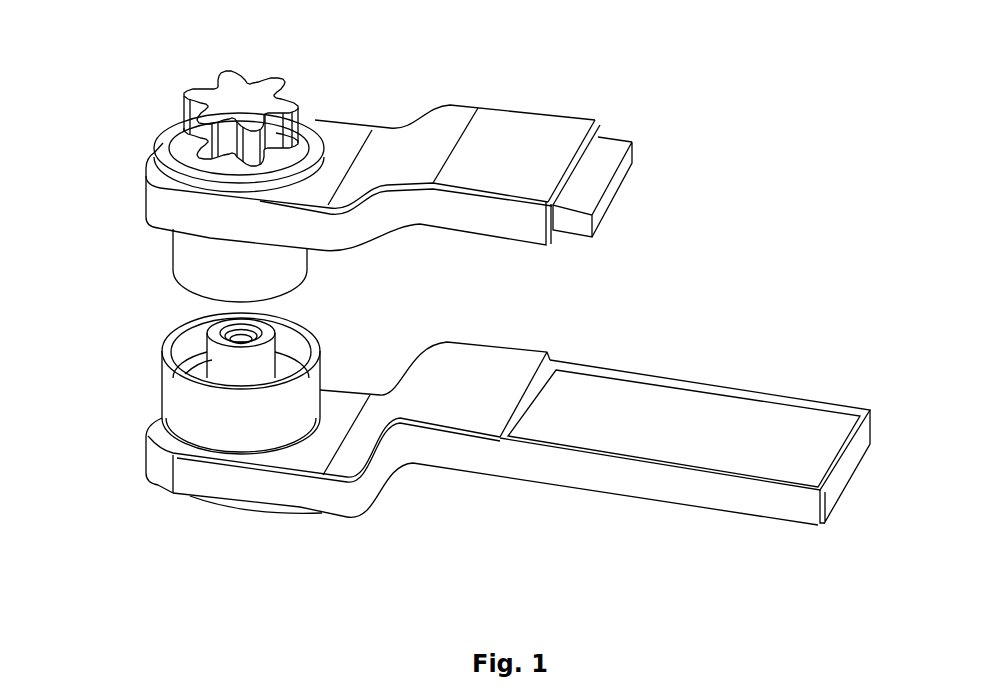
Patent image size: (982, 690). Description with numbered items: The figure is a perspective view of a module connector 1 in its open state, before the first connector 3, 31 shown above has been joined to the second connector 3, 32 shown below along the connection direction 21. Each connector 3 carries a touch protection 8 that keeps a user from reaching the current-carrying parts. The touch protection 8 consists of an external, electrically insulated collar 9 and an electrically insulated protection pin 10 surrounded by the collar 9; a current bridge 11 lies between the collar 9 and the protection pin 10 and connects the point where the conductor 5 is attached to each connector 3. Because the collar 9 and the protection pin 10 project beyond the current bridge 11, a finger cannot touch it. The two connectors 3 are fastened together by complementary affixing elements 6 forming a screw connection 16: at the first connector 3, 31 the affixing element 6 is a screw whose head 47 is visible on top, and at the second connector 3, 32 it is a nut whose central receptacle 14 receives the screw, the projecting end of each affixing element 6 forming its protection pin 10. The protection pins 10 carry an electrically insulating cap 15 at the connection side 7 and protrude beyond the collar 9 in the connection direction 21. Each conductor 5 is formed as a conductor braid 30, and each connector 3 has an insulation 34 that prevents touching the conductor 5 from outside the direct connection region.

The module connector 1 is at (147, 47).
The connector 3 is at (273, 528).
The first connector 31 is at (343, 110).
The second connector 32 is at (310, 545).
The conductor 5 is at (613, 153).
The affixing element 6 is at (228, 79).
The connection side 7 is at (168, 286).
The touch protection 8 is at (323, 268).
The collar 9 is at (185, 252).
The protection pin 10 is at (222, 356).
The current bridge 11 is at (282, 368).
The central receptacle 14 is at (240, 345).
The electrically insulating cap 15 is at (205, 357).
The screw connection 16 is at (115, 328).
The connection direction 21 is at (393, 348).
The conductor braid 30 is at (575, 205).
The insulation 34 is at (558, 152).
The head 47 is at (250, 91).